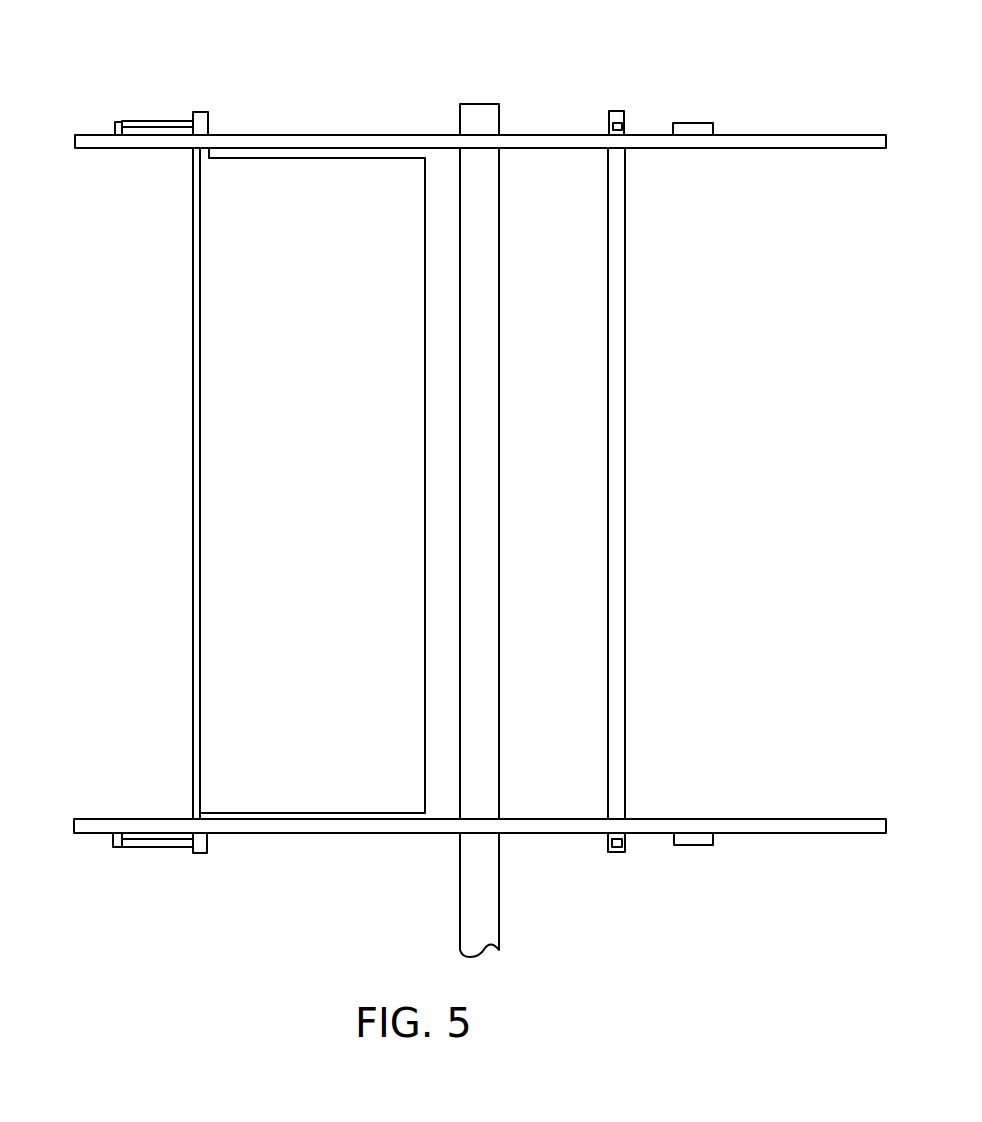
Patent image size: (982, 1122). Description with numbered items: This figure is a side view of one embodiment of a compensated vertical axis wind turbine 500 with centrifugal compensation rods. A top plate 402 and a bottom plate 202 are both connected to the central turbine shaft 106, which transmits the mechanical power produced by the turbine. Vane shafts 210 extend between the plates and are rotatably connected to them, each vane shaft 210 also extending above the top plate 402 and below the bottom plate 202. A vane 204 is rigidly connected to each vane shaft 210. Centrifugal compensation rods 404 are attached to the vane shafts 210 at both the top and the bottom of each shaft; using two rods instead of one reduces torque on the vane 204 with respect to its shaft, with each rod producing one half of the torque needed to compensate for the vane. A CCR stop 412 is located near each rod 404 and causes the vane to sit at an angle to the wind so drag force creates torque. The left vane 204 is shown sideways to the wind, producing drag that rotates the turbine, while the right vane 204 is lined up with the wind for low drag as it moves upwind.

The assembly 500 is at (138, 38).
The top plate 402 is at (358, 135).
The bottom plate 202 is at (847, 819).
The turbine shaft 106 is at (499, 104).
The vane 204 is at (197, 260).
The vane shaft 210 is at (209, 122).
The centrifugal compensation rod (CCR) 404 is at (133, 121).
The CCR stop 412 is at (115, 128).